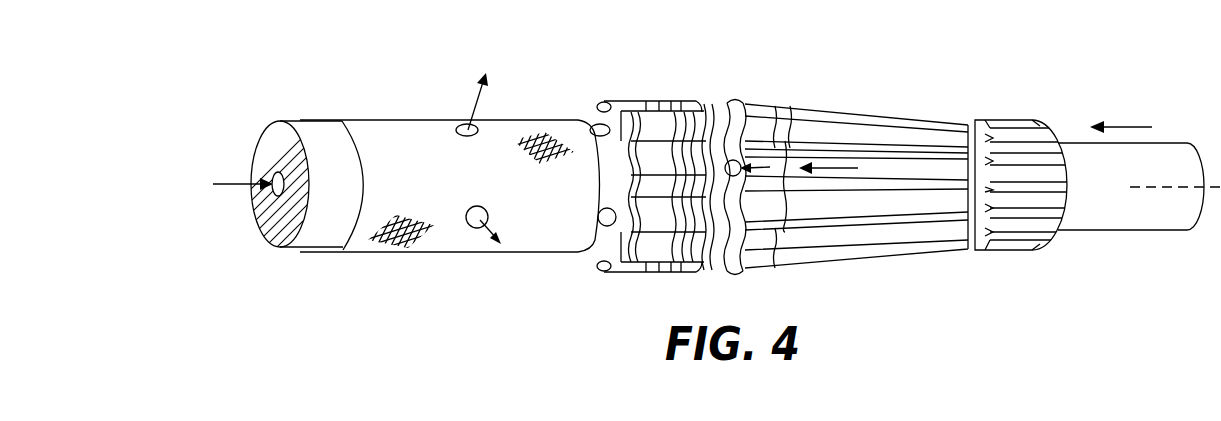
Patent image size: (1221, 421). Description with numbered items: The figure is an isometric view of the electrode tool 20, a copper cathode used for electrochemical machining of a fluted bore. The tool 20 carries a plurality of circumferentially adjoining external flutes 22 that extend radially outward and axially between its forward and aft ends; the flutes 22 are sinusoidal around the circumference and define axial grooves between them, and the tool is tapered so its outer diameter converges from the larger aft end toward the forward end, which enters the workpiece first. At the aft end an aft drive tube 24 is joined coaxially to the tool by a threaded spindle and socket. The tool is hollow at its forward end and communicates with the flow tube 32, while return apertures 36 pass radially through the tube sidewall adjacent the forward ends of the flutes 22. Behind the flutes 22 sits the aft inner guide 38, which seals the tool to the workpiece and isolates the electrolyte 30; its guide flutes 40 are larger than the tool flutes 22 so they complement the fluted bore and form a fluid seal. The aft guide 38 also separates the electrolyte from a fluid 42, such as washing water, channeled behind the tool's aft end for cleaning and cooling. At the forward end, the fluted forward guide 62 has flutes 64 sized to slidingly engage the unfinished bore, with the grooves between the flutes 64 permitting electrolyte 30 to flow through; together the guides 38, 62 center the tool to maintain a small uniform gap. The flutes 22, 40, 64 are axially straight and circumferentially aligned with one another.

The electrode tool 20 is at (847, 270).
The external flutes 22 is at (833, 150).
The aft drive tube 24 is at (308, 118).
The electrolyte 30 is at (1132, 127).
The flow tube 32 is at (1112, 231).
The return apertures 36 is at (720, 112).
The aft inner guide 38 is at (620, 278).
The guide flutes 40 is at (700, 262).
The fluid 42 is at (462, 114).
The fluted forward guide 62 is at (1006, 110).
The forward guide flutes 64 is at (1007, 250).